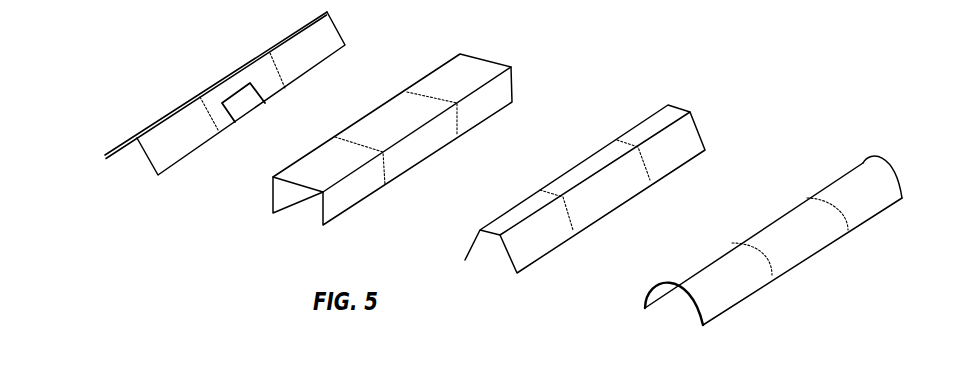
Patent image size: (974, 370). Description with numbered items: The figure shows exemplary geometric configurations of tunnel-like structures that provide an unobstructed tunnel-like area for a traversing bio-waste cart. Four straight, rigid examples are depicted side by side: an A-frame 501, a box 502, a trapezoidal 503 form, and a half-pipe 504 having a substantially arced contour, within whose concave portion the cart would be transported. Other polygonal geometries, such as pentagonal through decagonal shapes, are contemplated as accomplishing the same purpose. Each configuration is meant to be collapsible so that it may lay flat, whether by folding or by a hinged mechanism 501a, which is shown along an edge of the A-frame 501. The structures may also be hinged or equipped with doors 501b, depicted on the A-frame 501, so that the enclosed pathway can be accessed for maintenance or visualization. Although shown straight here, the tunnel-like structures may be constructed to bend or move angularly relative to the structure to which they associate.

The A-frame 501 is at (225, 93).
The hinged mechanism 501a is at (153, 123).
The doors 501b is at (248, 100).
The box 502 is at (463, 75).
The trapezoidal 503 is at (655, 128).
The half-pipe 504 is at (867, 188).